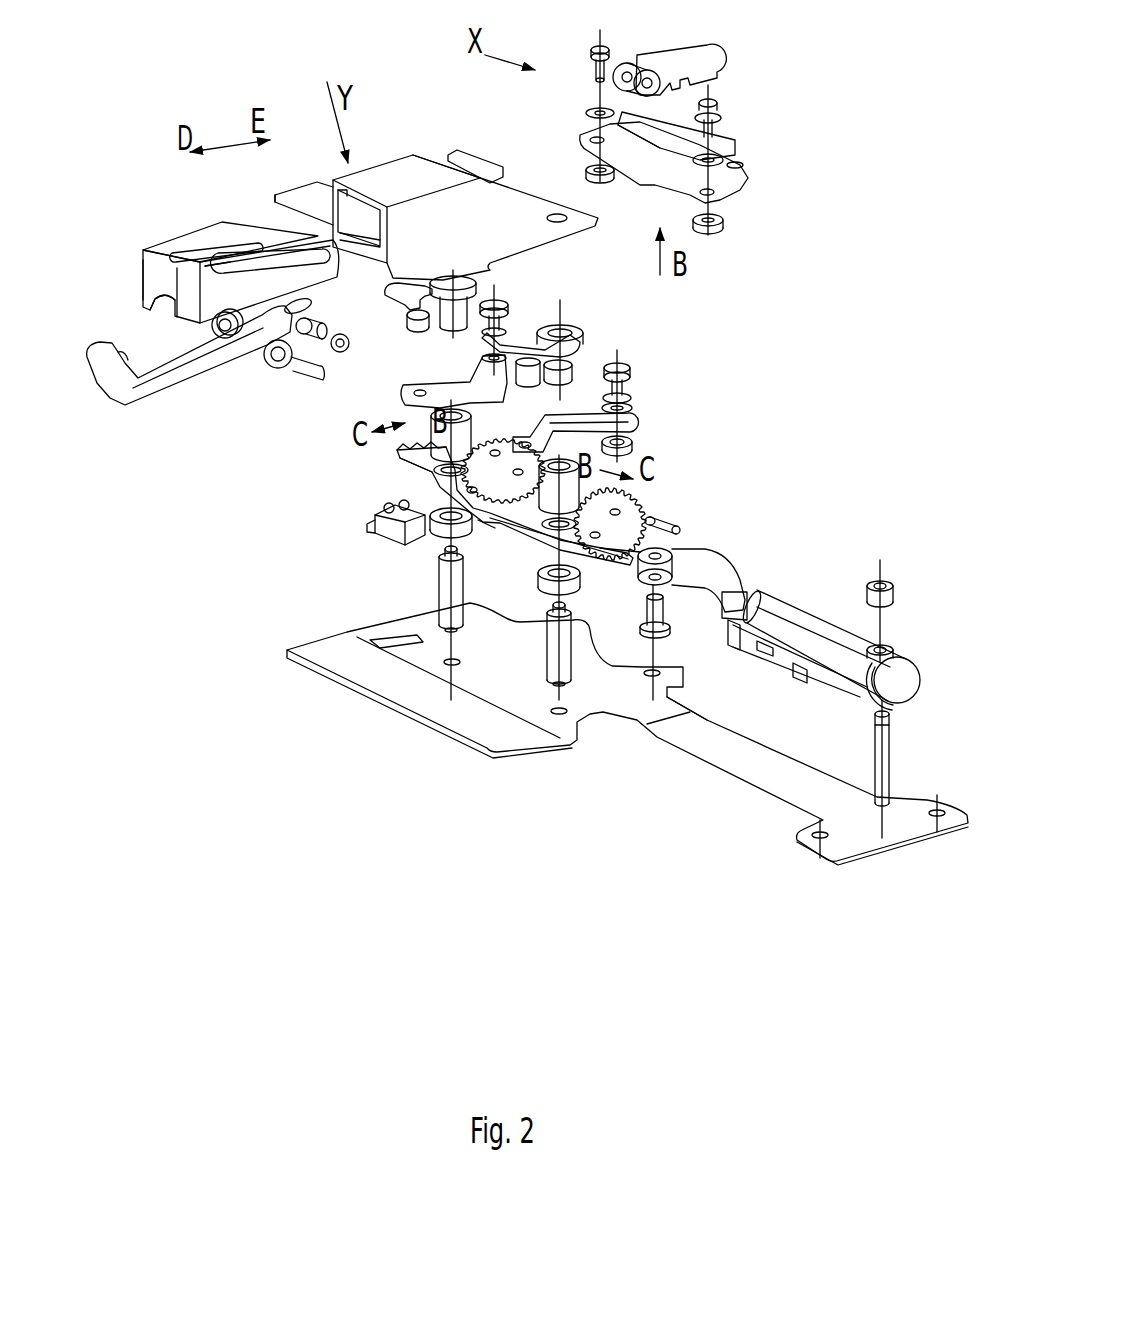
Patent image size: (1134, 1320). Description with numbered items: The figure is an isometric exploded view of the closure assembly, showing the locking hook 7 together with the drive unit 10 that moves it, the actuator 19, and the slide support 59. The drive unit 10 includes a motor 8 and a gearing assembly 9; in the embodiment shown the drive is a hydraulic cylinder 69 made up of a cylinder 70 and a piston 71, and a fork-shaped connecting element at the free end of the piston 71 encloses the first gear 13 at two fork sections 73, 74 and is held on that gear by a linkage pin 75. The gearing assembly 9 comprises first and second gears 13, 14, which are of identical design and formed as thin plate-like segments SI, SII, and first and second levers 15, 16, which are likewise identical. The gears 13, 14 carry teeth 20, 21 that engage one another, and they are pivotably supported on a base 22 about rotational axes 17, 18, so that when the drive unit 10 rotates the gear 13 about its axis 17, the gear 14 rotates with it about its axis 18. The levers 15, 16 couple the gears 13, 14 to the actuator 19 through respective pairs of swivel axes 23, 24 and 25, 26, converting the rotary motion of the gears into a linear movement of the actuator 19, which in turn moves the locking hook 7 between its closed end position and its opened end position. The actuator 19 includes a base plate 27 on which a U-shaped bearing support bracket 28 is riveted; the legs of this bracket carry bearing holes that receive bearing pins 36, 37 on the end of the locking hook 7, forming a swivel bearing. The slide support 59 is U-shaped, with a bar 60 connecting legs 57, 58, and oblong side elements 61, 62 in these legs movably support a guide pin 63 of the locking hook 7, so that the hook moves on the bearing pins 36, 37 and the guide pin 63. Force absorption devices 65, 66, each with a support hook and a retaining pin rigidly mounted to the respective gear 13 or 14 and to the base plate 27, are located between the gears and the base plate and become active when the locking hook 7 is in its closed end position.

The locking hook 7 is at (142, 406).
The motor 8 is at (471, 414).
The gearing assembly 9 is at (649, 570).
The drive unit 10 is at (794, 639).
The first gearwheel 13 is at (623, 568).
The second gearwheel 14 is at (496, 436).
The first lever 15 is at (576, 404).
The second lever 16 is at (350, 344).
The rotational axis 17 is at (466, 521).
The rotational axis 18 is at (397, 470).
The actuator 19 is at (733, 210).
The teeth 20 is at (645, 493).
The teeth 21 is at (390, 450).
The base 22 is at (627, 732).
The swivel axis 23 is at (615, 365).
The swivel axis 24 is at (641, 383).
The swivel axis 25 is at (404, 391).
The swivel axis 26 is at (516, 313).
The base plate 27 is at (745, 165).
The bearing support bracket 28 is at (727, 55).
The bearing pin 36 is at (330, 324).
The bearing pin 37 is at (293, 298).
The leg 57 is at (210, 221).
The leg 58 is at (182, 254).
The slide support 59 is at (157, 310).
The bar 60 is at (156, 278).
The oblong side element 61 is at (298, 268).
The oblong side element 62 is at (225, 247).
The guide pin 63 is at (292, 384).
The force absorption device 65 is at (580, 313).
The force absorption device 66 is at (403, 278).
The hydraulic cylinder 69 is at (831, 606).
The cylinder 70 is at (855, 644).
The piston 71 is at (720, 633).
The fork section 73 is at (683, 598).
The fork section 74 is at (712, 546).
The linkage pin 75 is at (645, 657).
The plate-like segment SI is at (485, 532).
The plate-like segment SII is at (410, 483).